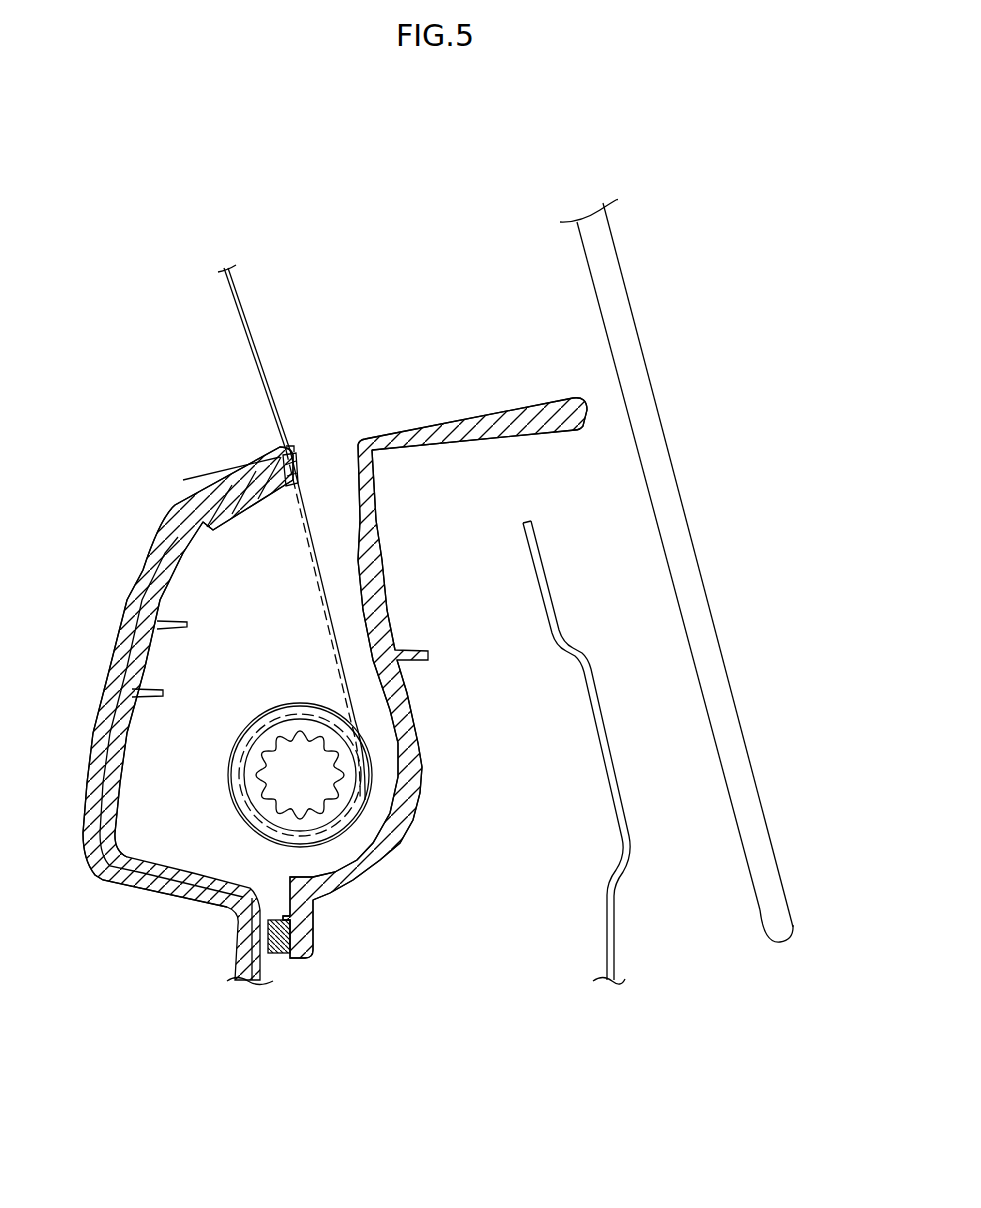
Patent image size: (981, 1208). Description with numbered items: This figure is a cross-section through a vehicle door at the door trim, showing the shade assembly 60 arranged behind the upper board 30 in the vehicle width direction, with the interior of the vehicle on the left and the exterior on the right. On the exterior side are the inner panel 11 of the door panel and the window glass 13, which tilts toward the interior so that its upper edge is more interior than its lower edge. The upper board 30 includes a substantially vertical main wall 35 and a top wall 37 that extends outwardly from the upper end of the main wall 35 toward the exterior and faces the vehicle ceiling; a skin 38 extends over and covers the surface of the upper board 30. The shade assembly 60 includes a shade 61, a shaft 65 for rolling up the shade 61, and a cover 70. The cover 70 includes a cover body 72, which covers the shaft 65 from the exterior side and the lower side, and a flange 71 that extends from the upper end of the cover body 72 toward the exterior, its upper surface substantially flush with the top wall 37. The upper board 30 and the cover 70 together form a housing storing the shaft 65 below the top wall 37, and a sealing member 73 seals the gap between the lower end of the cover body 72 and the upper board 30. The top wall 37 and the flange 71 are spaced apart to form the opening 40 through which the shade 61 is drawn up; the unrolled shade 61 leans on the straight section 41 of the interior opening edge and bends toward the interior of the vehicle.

The inner panel 11 is at (616, 918).
The window glass 13 is at (682, 488).
The upper board 30 is at (163, 915).
The main wall 35 is at (140, 633).
The top wall 37 is at (235, 490).
The skin 38 is at (111, 670).
The opening 40 is at (300, 468).
The straight section 41 is at (294, 452).
The shade assembly 60 is at (333, 918).
The shade 61 is at (246, 330).
The shaft 65 is at (317, 787).
The cover 70 is at (402, 857).
The flange 71 is at (519, 413).
The cover body 72 is at (413, 758).
The sealing member 73 is at (280, 955).